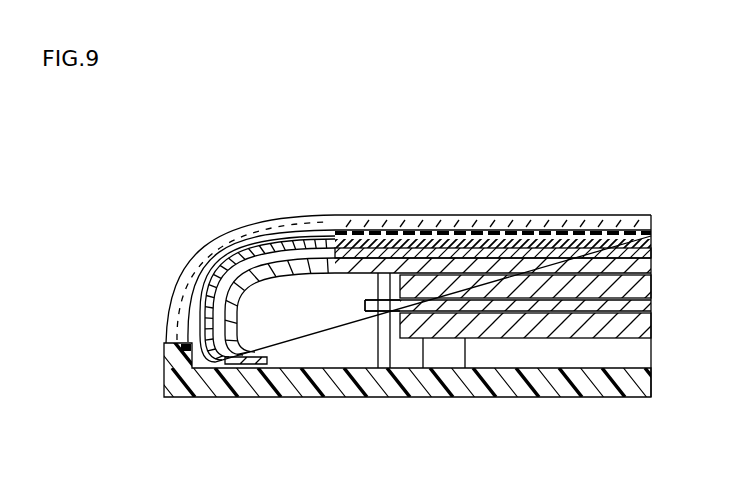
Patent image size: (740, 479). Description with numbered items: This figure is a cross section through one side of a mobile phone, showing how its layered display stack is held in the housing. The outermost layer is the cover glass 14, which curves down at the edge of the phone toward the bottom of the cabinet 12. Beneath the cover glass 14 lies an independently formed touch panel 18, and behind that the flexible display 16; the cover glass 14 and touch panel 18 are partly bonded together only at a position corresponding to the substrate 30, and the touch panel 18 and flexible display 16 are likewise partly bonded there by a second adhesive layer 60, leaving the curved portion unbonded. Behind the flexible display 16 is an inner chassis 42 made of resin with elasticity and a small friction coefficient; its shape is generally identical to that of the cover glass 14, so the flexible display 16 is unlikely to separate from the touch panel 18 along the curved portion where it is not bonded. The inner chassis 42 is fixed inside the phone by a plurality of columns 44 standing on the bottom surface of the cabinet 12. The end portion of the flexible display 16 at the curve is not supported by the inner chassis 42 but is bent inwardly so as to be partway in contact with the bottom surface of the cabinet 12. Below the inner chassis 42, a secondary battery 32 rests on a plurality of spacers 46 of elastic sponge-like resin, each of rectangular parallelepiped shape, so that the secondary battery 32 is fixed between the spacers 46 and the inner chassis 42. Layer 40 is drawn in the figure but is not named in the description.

The cabinet 12 is at (238, 398).
The cover glass 14 is at (172, 317).
The flexible display 16 is at (556, 250).
The touch panel 18 is at (307, 242).
The substrate 30 is at (365, 302).
The secondary battery 32 is at (602, 330).
The cover window 40 is at (431, 228).
The inner chassis 42 is at (295, 284).
The columns 44 is at (383, 347).
The spacers 46 is at (438, 352).
The second adhesive layer 60 is at (511, 237).